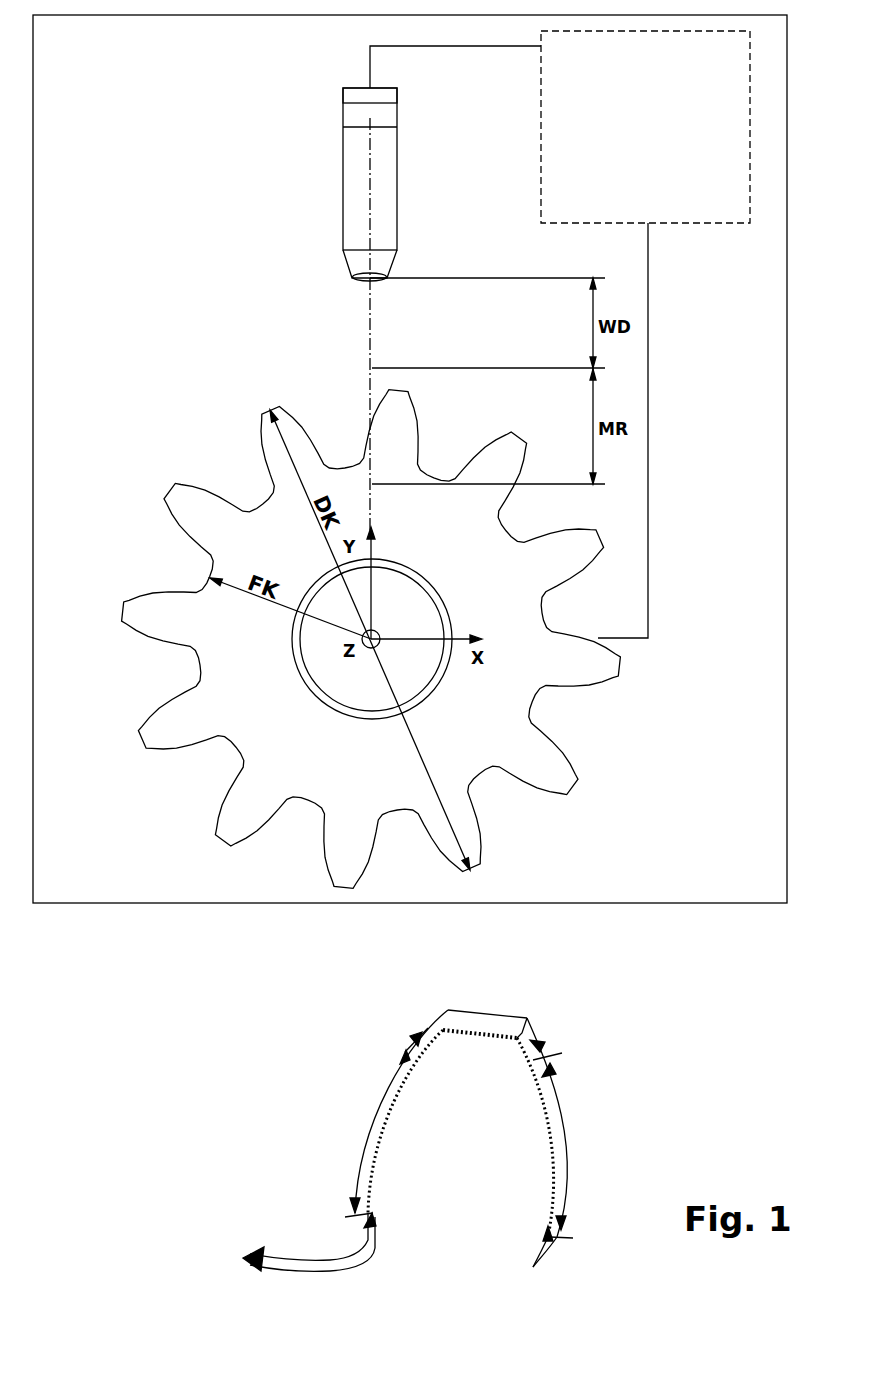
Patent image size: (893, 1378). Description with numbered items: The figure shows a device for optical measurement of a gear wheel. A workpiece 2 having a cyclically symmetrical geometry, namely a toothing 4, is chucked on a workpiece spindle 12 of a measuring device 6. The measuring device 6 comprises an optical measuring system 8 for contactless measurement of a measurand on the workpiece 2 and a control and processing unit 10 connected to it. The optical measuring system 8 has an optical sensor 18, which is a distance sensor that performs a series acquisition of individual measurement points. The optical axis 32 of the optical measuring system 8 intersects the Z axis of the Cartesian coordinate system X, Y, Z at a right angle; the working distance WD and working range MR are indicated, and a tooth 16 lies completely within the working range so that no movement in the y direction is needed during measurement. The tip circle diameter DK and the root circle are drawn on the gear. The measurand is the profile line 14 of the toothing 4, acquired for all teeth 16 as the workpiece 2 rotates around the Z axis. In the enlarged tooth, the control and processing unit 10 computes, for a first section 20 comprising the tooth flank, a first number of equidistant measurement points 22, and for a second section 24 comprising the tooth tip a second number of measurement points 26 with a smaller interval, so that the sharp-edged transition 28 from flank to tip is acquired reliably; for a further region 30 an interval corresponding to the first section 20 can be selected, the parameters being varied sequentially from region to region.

The workpiece 2 is at (140, 472).
The toothing 4 is at (152, 614).
The measuring device 6 is at (78, 903).
The optical measuring system 8 is at (342, 177).
The control and processing unit 10 is at (658, 142).
The workpiece spindle 12 is at (328, 680).
The profile line 14 is at (210, 480).
The tooth 16 is at (202, 515).
The optical sensor 18 is at (352, 117).
The first section 20 is at (567, 1132).
The measurement points 22 is at (558, 1163).
The second section 24 is at (517, 1012).
The measurement points 26 is at (475, 1027).
The sharp-edged transition 28 is at (522, 1033).
The region 30 is at (365, 1140).
The optical axis 32 is at (367, 337).